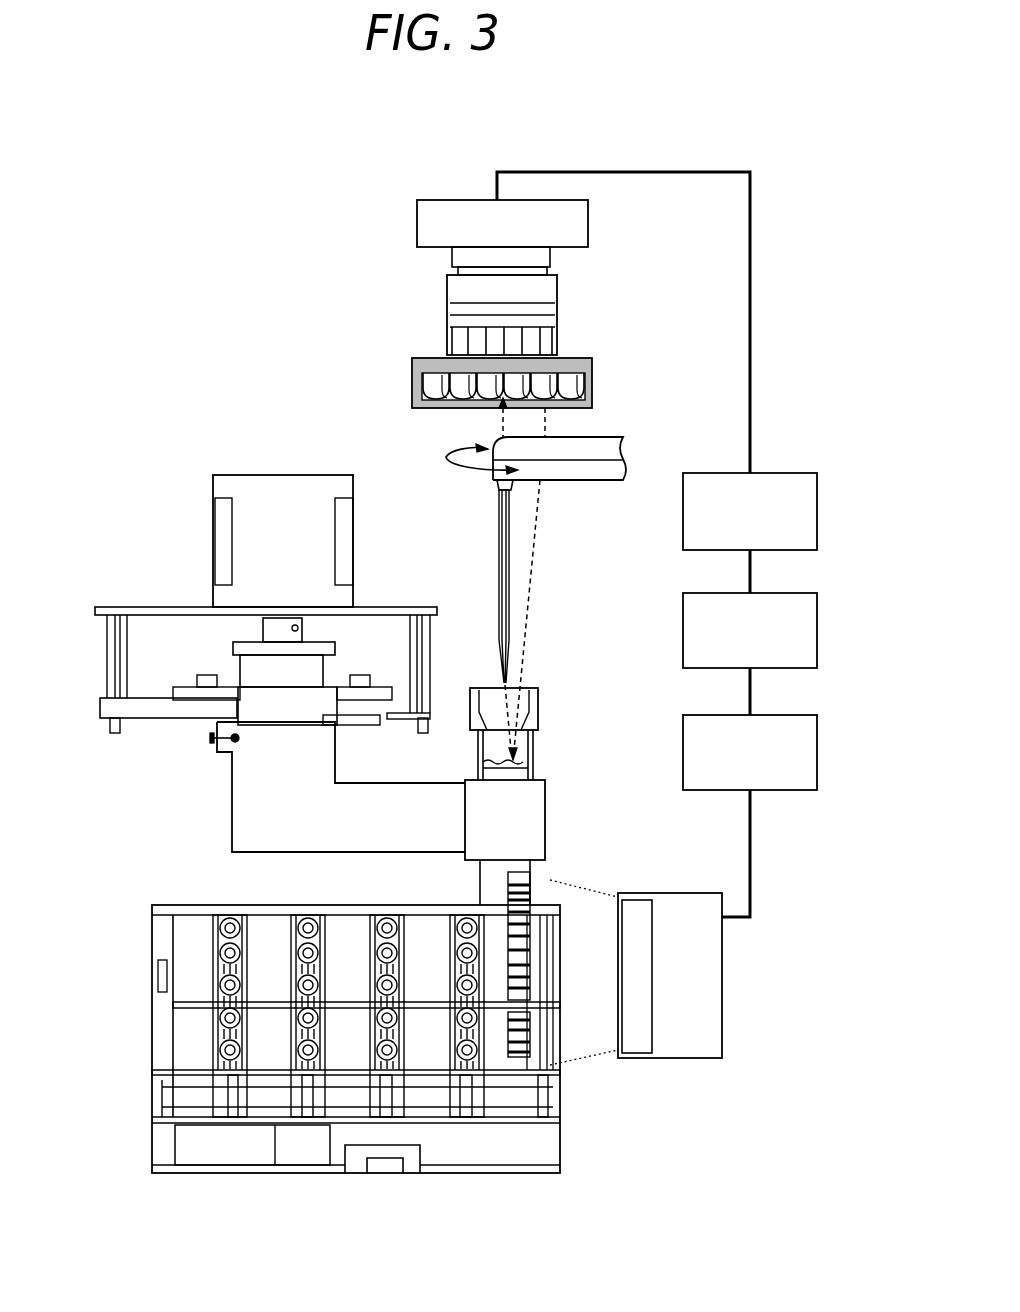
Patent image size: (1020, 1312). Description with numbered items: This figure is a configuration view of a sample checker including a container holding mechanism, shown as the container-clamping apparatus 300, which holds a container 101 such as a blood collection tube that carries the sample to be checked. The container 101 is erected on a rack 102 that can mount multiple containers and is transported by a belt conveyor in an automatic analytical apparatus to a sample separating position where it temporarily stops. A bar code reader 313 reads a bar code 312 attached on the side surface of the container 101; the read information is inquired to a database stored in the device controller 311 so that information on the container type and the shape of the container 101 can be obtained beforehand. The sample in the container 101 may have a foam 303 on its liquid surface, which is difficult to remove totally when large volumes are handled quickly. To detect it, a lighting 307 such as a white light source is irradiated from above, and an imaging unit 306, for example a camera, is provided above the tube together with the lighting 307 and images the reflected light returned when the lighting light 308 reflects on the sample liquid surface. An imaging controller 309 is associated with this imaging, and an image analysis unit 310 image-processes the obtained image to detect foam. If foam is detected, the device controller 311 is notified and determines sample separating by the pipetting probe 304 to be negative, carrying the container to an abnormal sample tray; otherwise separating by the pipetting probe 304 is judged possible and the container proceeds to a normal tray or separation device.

The container-clamping apparatus 300 is at (172, 547).
The imaging unit 306 is at (560, 249).
The lighting 307 is at (568, 380).
The pipetting probe 304 is at (615, 442).
The lighting light 308 is at (530, 577).
The foam 303 is at (530, 705).
The container 101 is at (532, 767).
The bar code 312 is at (530, 878).
The imaging controller 309 is at (750, 511).
The image analysis unit 310 is at (750, 630).
The device controller 311 is at (750, 752).
The bar code reader 313 is at (721, 985).
The rack 102 is at (565, 1162).